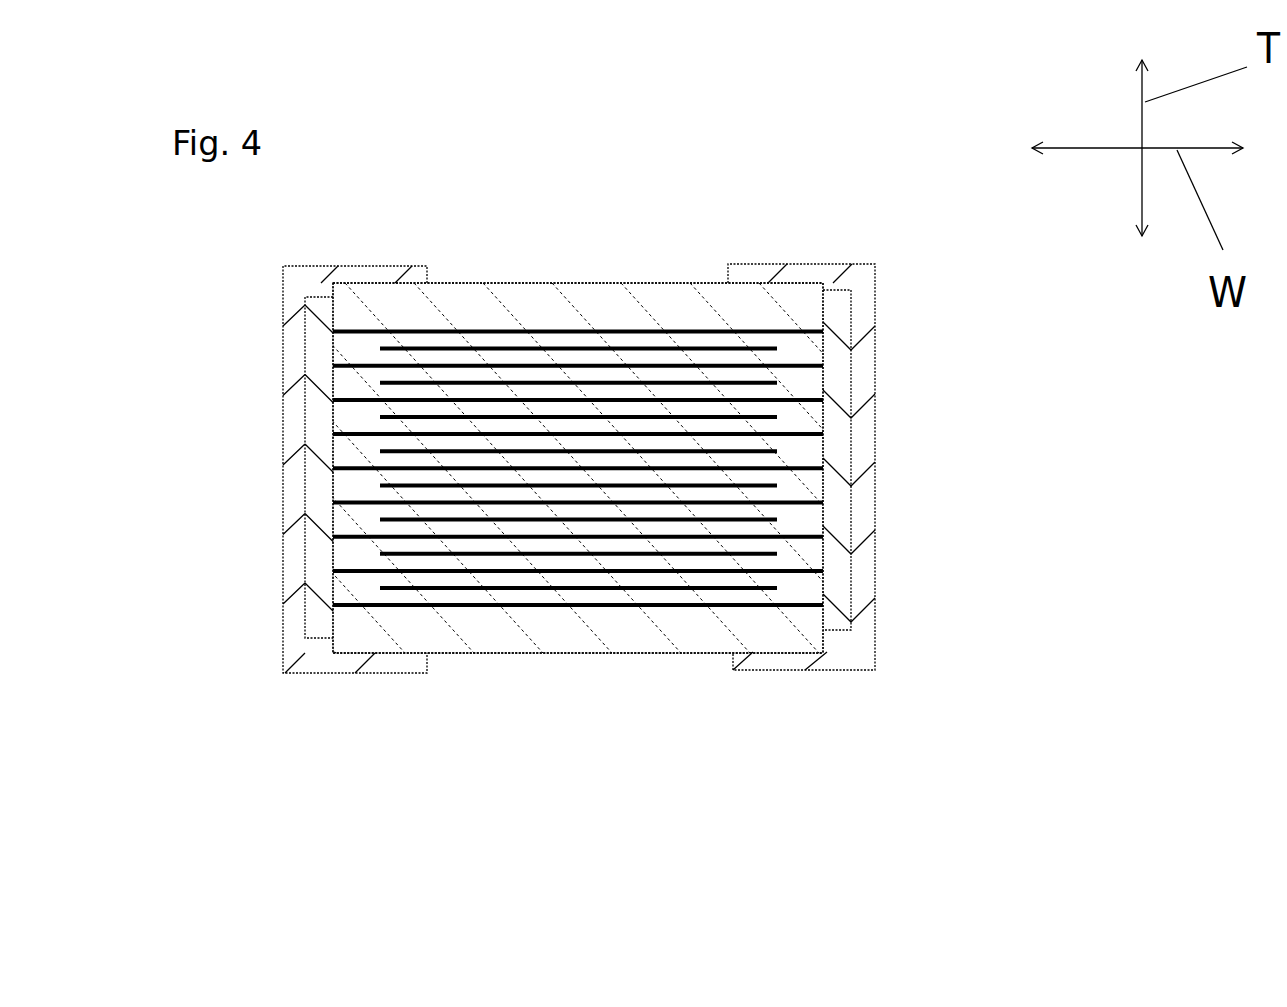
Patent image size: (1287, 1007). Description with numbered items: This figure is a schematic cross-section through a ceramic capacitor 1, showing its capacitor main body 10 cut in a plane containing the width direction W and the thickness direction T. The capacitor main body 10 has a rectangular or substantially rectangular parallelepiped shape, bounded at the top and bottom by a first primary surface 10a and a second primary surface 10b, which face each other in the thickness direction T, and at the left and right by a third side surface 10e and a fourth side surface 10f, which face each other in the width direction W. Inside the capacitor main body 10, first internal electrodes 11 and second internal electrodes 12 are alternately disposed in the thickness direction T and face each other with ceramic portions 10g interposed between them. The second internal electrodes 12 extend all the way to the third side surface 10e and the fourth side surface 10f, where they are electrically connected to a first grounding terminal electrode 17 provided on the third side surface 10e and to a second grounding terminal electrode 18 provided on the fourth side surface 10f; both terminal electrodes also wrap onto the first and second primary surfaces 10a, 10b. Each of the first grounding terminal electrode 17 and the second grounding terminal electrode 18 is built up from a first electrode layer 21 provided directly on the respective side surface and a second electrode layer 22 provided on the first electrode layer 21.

The ceramic capacitor 1 is at (833, 217).
The capacitor main body 10 is at (627, 281).
The first primary surface 10a is at (513, 281).
The second primary surface 10b is at (492, 653).
The third side surface 10e is at (333, 600).
The fourth side surface 10f is at (823, 578).
The ceramic portion 10g is at (660, 580).
The first internal electrode 11 is at (547, 593).
The second internal electrode 12 is at (400, 573).
The first grounding terminal electrode 17 is at (283, 628).
The second grounding terminal electrode 18 is at (882, 392).
The first electrode layer 21 is at (333, 565).
The second electrode layer 22 is at (283, 405).